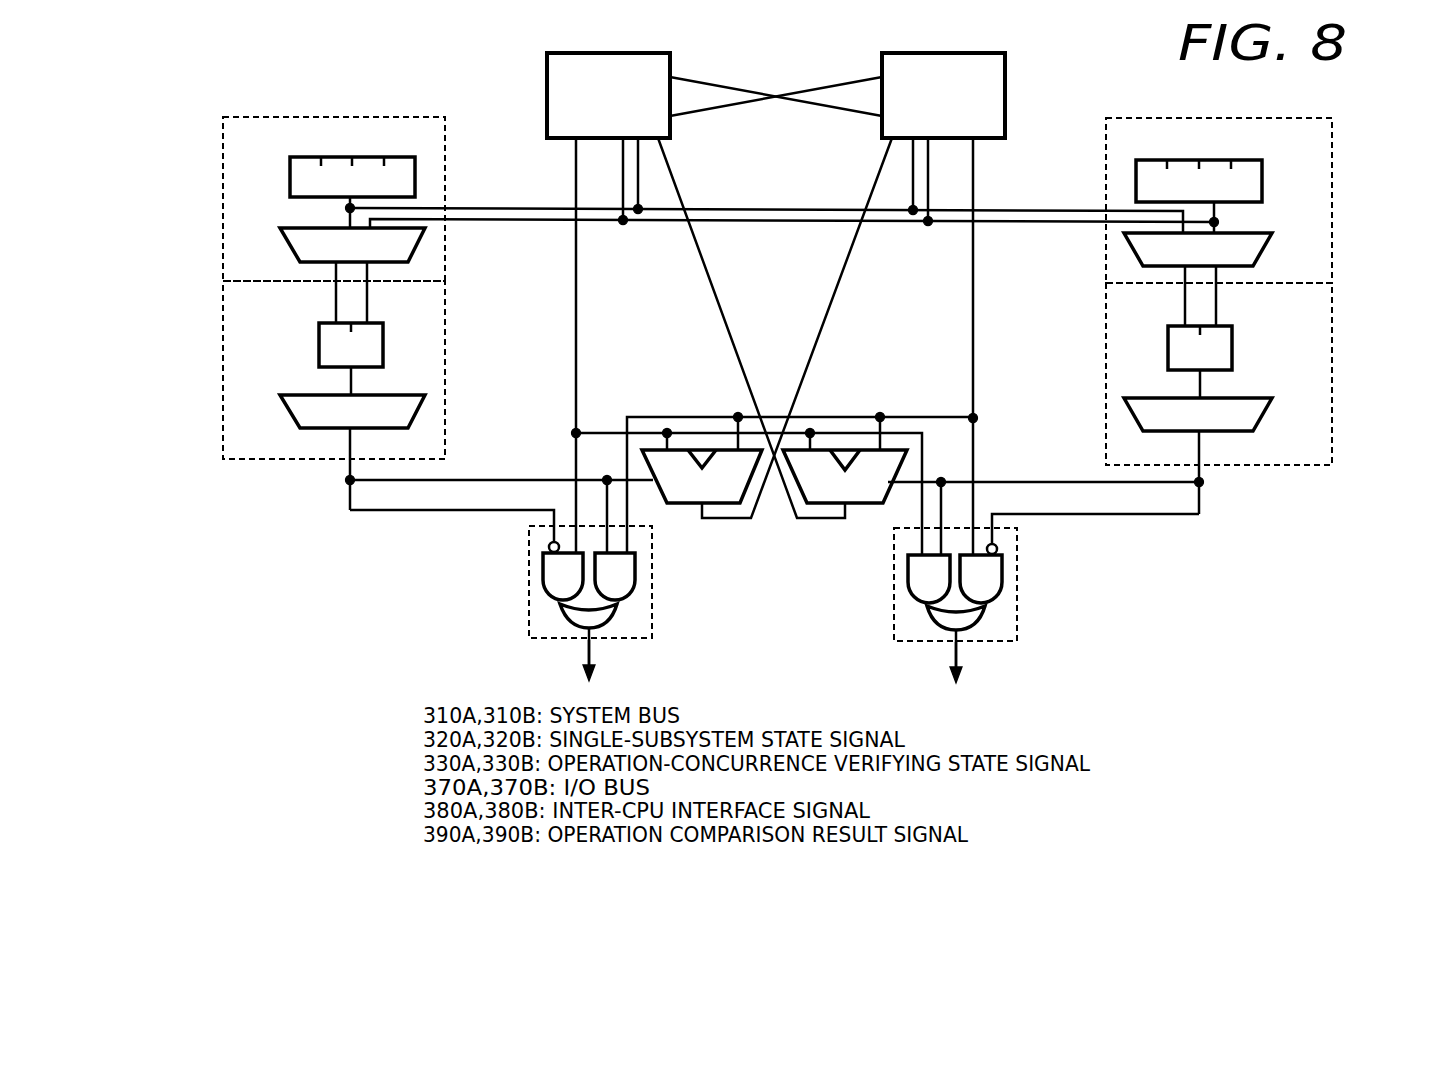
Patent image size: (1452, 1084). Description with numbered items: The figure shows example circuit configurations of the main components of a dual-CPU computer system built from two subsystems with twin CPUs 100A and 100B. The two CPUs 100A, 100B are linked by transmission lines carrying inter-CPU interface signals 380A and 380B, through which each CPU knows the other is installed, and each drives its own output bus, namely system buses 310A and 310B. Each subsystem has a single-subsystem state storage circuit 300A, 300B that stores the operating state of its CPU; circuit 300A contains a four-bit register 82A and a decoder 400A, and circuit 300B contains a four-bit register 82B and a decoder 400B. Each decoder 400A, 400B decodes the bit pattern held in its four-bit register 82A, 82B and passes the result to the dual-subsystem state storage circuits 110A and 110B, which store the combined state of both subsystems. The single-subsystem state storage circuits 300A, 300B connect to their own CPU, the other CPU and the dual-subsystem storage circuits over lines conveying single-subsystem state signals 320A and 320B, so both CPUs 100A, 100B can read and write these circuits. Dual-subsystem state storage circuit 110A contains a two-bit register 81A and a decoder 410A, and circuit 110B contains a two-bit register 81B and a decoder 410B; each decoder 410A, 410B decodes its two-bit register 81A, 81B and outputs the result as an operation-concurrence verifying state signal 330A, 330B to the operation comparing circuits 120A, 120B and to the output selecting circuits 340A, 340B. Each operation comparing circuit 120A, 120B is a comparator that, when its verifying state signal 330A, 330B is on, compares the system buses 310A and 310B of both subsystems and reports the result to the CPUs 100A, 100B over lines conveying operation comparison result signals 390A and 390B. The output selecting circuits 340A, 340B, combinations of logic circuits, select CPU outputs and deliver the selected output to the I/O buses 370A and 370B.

The CPU 100A is at (547, 75).
The CPU 100B is at (1008, 75).
The single-subsystem state storage circuit 300A is at (287, 117).
The single-subsystem state storage circuit 300B is at (1323, 158).
The dual-subsystem state storage circuit 110A is at (263, 464).
The dual-subsystem state storage circuit 110B is at (1304, 463).
The four-bit register 82A is at (290, 166).
The four-bit register 82B is at (1262, 168).
The two-bit register 81A is at (318, 329).
The two-bit register 81B is at (1229, 335).
The decoder 400A is at (297, 228).
The decoder 400B is at (1255, 232).
The decoder 410A is at (297, 395).
The decoder 410B is at (1255, 398).
The operation comparing circuit 120A is at (690, 506).
The operation comparing circuit 120B is at (857, 506).
The system bus 310A is at (576, 270).
The system bus 310B is at (973, 270).
The single-subsystem state signal 320A is at (713, 209).
The single-subsystem state signal 320B is at (760, 226).
The operation-concurrence verifying state signal 330A is at (548, 480).
The operation-concurrence verifying state signal 330B is at (1008, 481).
The output selecting circuit 340A is at (531, 576).
The output selecting circuit 340B is at (1018, 572).
The I/O bus 370A is at (588, 660).
The I/O bus 370B is at (958, 660).
The inter-CPU interface signal 380A is at (712, 83).
The inter-CPU interface signal 380B is at (723, 110).
The operation comparison result signal 390A is at (826, 312).
The operation comparison result signal 390B is at (726, 312).